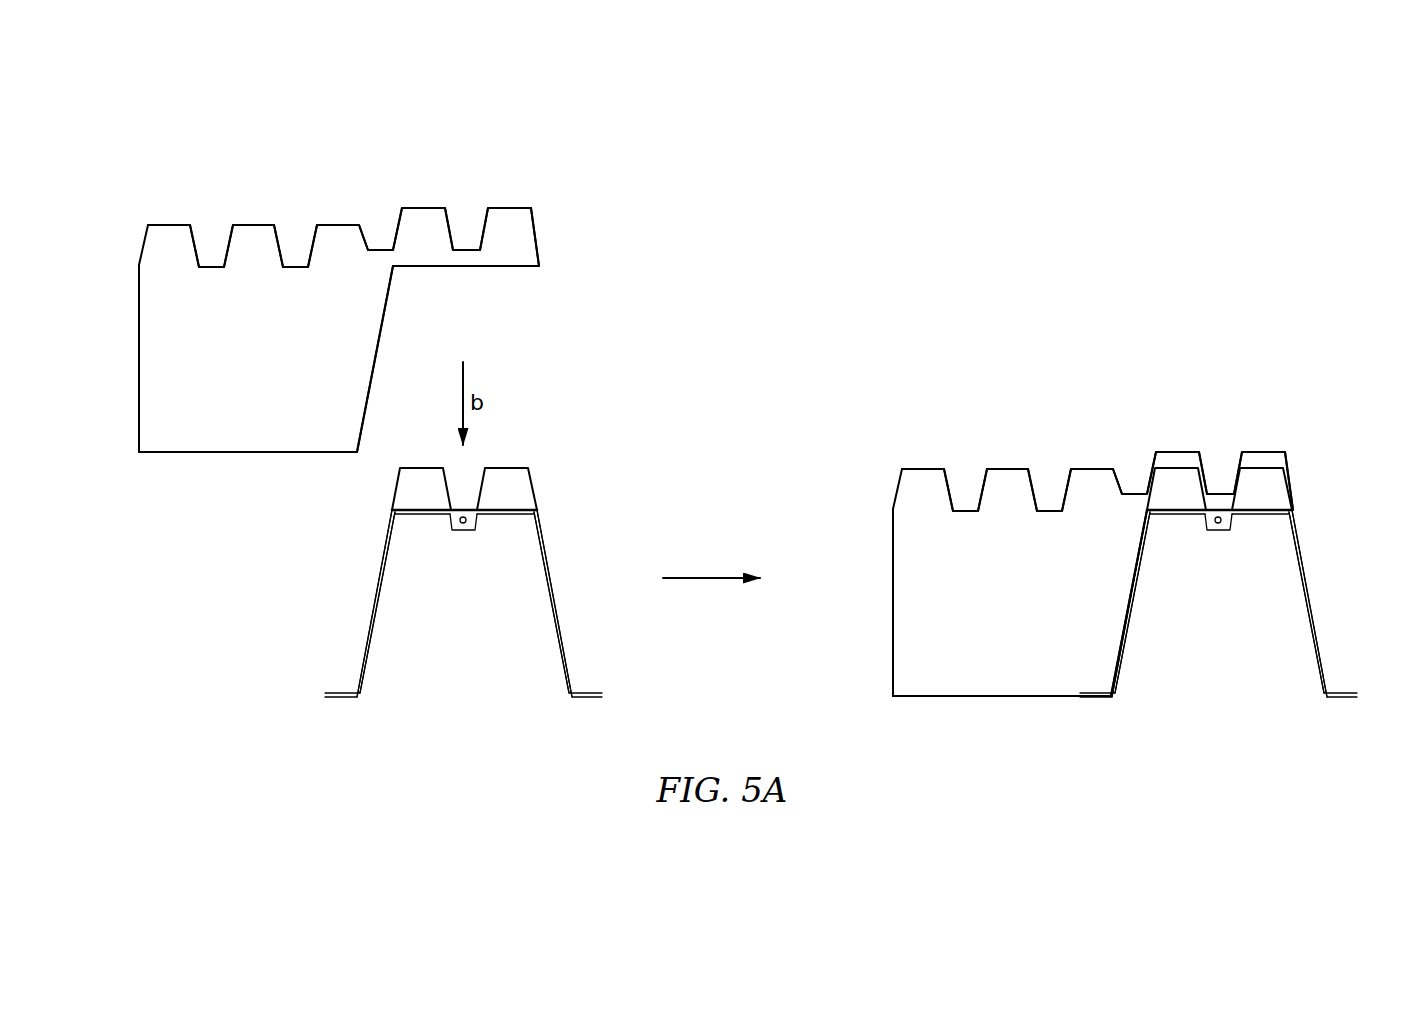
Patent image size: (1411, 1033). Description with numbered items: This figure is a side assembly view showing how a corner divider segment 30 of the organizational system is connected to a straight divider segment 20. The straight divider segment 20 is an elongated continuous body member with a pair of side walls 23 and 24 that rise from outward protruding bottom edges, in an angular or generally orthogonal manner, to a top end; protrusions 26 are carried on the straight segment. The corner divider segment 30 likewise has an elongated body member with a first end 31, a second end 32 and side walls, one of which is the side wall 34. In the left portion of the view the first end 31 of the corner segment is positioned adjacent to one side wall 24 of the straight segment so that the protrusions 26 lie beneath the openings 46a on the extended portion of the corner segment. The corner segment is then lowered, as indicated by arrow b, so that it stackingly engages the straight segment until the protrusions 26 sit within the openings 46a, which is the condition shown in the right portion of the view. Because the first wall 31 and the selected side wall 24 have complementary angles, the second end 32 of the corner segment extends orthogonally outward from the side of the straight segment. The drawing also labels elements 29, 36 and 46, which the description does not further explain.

The divider segment 20 is at (558, 563).
The side wall 23 is at (562, 612).
The side wall 24 is at (370, 608).
The protrusions 26 is at (423, 468).
The fastening opening 29 is at (462, 532).
The corner divider segment 30 is at (100, 172).
The first end 31 is at (376, 353).
The second end 32 is at (139, 387).
The side wall 34 is at (237, 367).
The teeth 36 is at (168, 223).
The raised teeth 46 is at (424, 206).
The openings 46a is at (431, 274).